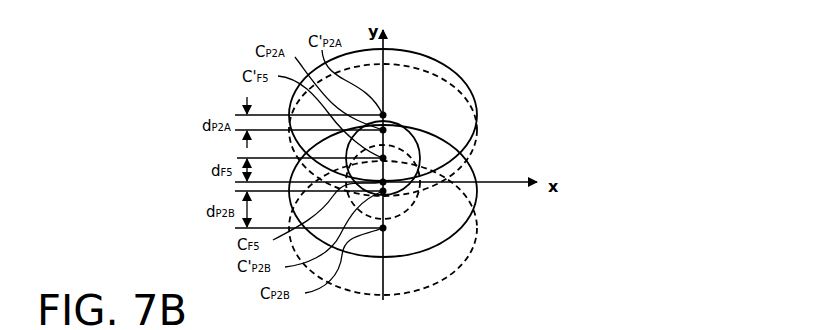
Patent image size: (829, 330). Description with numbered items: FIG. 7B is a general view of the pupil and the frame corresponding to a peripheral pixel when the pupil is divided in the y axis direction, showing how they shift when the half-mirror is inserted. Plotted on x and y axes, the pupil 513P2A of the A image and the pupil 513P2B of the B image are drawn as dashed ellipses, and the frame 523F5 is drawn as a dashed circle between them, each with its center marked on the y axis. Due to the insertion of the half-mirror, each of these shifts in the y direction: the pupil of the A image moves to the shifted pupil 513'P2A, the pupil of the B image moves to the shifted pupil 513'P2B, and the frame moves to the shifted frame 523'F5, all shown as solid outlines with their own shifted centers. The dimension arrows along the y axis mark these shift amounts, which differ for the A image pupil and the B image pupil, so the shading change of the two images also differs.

The shifted pupil of the A image 513'P2A is at (420, 113).
The pupil of the A image 513P2A is at (463, 94).
The shifted frame 523'F5 is at (449, 150).
The frame 523F5 is at (412, 164).
The shifted pupil of the B image 513'P2B is at (428, 191).
The pupil of the B image 513P2B is at (472, 248).